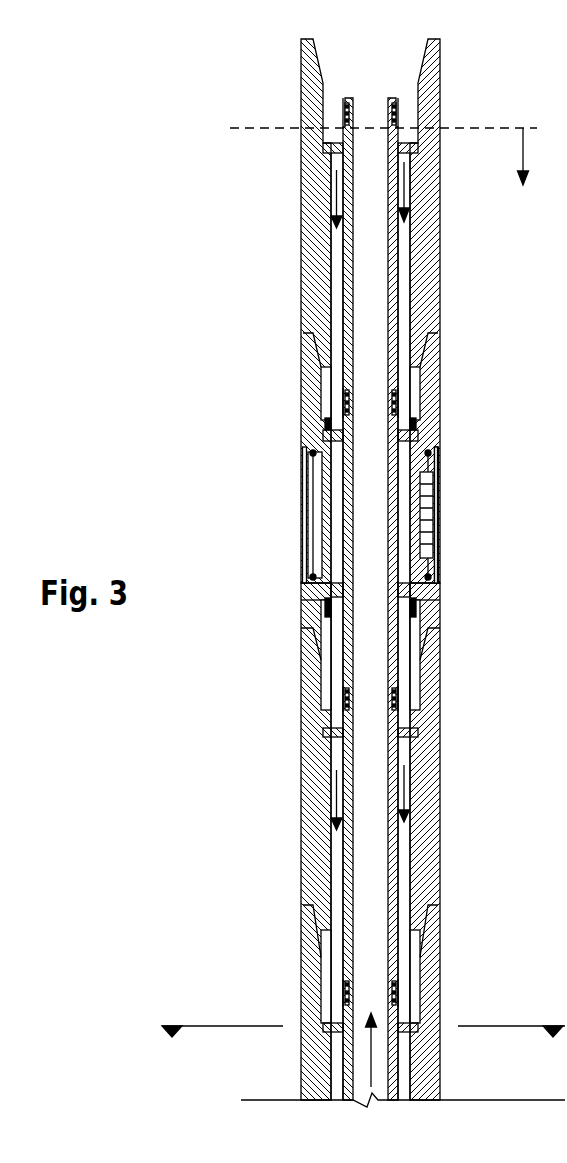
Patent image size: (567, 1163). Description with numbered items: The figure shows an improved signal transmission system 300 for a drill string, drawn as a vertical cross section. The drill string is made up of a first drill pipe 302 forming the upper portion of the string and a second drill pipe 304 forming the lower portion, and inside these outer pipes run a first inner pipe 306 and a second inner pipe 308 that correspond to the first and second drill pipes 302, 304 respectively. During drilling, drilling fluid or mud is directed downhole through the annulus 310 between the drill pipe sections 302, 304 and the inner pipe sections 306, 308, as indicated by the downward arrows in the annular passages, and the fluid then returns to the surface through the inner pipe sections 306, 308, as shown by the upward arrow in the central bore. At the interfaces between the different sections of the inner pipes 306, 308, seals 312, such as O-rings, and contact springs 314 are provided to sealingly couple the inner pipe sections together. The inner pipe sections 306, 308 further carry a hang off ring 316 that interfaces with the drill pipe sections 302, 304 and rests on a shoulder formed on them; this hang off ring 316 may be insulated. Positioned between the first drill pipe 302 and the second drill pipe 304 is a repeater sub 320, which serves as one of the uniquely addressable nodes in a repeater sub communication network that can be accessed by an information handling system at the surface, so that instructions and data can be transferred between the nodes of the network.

The signal transmission system 300 is at (301, 556).
The first drill pipe 302 is at (432, 47).
The second drill pipe 304 is at (428, 908).
The first inner pipe 306 is at (335, 262).
The second inner pipe 308 is at (350, 866).
The annulus 310 is at (403, 262).
The seals 312 is at (392, 120).
The contact springs 314 is at (347, 113).
The hang off ring 316 is at (326, 148).
The repeater sub 320 is at (423, 382).